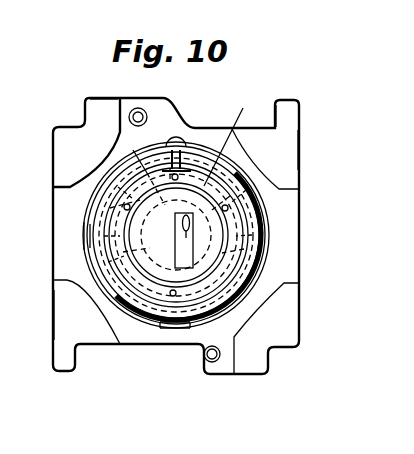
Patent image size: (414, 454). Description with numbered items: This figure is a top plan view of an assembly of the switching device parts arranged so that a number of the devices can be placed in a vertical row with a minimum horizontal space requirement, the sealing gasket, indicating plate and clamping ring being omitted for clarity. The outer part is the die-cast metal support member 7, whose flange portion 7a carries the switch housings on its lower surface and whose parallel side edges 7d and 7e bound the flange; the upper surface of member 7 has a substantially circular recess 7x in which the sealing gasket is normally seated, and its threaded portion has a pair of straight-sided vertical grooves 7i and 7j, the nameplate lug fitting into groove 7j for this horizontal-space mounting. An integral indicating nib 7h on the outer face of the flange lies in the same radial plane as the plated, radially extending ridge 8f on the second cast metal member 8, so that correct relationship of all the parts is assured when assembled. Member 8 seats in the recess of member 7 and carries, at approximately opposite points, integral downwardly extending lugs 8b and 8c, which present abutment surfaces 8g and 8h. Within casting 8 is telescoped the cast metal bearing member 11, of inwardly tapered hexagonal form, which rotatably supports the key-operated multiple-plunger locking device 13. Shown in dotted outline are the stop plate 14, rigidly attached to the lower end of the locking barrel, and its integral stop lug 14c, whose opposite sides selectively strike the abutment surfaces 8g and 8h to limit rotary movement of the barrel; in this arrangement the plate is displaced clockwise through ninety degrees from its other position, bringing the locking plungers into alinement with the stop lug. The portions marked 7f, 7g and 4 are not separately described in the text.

The cast metal support member 7 is at (304, 285).
The flange portion 7a is at (294, 118).
The side edge 7d is at (300, 147).
The side edge 7e is at (53, 325).
The housing foot 7f is at (240, 372).
The housing corner 7g is at (99, 98).
The indicating nib 7h is at (176, 135).
The vertical groove 7i is at (83, 237).
The vertical groove 7j is at (173, 326).
The circular recess 7x is at (123, 325).
The second cast metal member 8 is at (272, 245).
The downwardly extending lug 8b is at (123, 252).
The downwardly extending lug 8c is at (244, 249).
The radially extending ridge 8f is at (187, 175).
The abutment surface 8g is at (110, 210).
The abutment surface 8h is at (257, 201).
The bearing member 11 is at (229, 141).
The locking device 13 is at (160, 244).
The stop plate 14 is at (250, 175).
The stop lug 14c is at (143, 170).
The dial index 4 is at (162, 236).